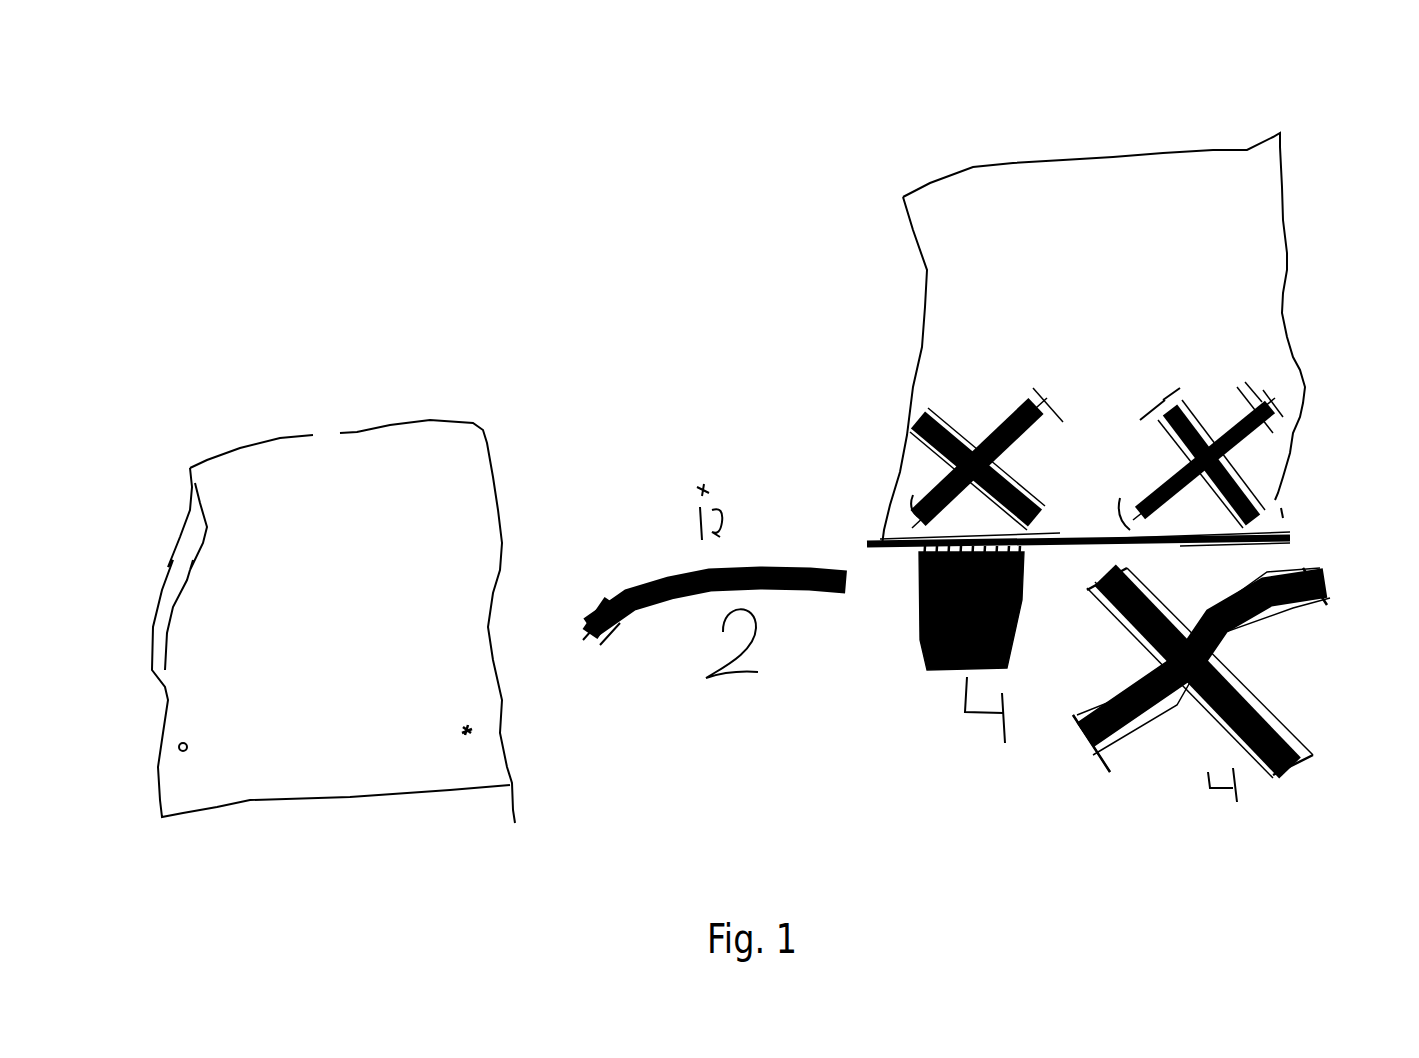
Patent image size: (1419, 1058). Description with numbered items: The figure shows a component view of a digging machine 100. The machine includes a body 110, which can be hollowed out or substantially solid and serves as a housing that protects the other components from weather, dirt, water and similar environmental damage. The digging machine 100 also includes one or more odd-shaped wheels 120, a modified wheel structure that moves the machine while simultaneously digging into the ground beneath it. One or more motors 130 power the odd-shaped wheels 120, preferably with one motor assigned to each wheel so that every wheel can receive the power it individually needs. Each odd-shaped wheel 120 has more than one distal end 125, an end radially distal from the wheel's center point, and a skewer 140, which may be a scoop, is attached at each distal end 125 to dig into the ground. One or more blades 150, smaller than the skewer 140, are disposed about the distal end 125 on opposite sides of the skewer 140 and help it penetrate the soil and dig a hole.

The digging machine 100 is at (605, 228).
The body 110 is at (310, 475).
The odd-shaped wheel 120 is at (1283, 570).
The distal end 125 is at (1087, 588).
The motor 130 is at (917, 635).
The skewer 140 is at (782, 567).
The blade 150 is at (703, 490).